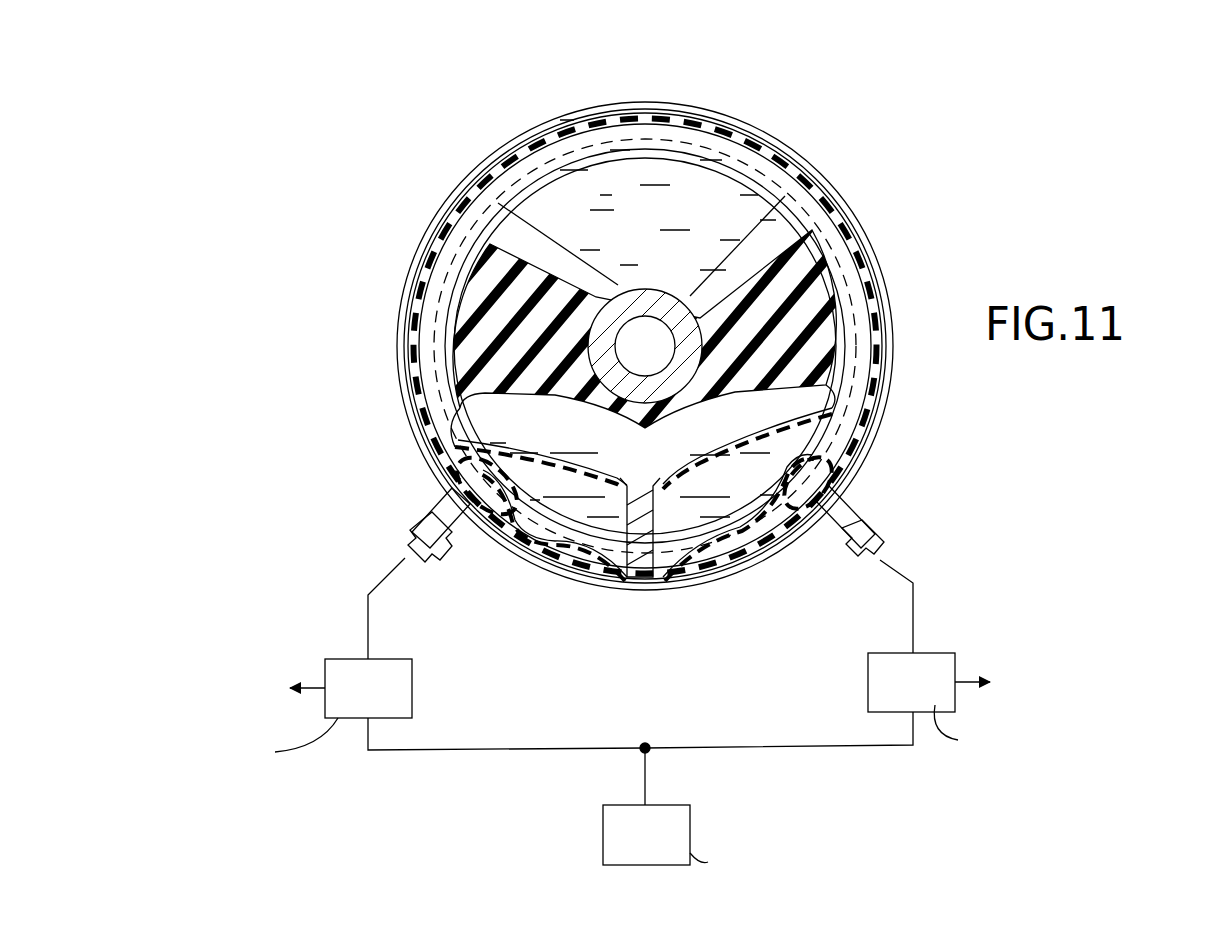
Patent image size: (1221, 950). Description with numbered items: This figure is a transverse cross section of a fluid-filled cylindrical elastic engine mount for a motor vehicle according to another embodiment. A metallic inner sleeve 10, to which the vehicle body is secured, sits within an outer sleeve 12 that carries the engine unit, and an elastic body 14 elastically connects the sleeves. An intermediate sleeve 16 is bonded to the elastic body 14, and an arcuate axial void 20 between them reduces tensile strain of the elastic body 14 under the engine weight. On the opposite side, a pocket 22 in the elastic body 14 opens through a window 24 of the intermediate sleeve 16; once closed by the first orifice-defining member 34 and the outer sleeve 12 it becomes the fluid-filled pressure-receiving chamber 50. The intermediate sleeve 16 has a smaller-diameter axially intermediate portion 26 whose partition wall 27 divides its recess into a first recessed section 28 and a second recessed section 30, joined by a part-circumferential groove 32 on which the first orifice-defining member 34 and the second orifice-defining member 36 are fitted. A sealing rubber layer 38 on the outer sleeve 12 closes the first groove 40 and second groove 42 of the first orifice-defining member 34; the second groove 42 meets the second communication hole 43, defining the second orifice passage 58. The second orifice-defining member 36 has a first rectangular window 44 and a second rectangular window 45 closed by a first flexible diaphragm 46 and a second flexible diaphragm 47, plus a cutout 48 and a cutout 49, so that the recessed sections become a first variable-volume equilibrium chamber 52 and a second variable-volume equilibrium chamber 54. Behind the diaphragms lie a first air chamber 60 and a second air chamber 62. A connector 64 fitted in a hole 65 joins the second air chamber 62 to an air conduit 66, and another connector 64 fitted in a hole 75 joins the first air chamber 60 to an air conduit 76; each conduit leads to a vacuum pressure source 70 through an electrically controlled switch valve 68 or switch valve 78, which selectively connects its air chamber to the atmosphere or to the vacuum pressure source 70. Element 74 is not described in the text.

The inner sleeve 10 is at (625, 303).
The outer sleeve 12 is at (805, 170).
The elastic body 14 is at (503, 265).
The intermediate sleeve 16 is at (436, 383).
The axial void 20 is at (628, 457).
The pocket 22 is at (752, 243).
The window 24 is at (826, 182).
The axially intermediate portion 26 is at (880, 335).
The partition wall 27 is at (643, 500).
The first recessed section 28 is at (440, 440).
The second recessed section 30 is at (822, 428).
The part-circumferential groove 32 is at (440, 300).
The first orifice-defining member 34 is at (548, 140).
The second orifice-defining member 36 is at (653, 590).
The sealing rubber layer 38 is at (770, 138).
The first groove 40 is at (460, 258).
The second groove 42 is at (852, 226).
The second communication hole 43 is at (652, 140).
The first rectangular window 44 is at (460, 490).
The second rectangular window 45 is at (857, 475).
The first flexible diaphragm 46 is at (570, 525).
The second flexible diaphragm 47 is at (693, 540).
The cutout 48 is at (432, 448).
The cutout 49 is at (850, 440).
The pressure-receiving chamber 50 is at (582, 176).
The first variable-volume equilibrium chamber 52 is at (512, 550).
The second variable-volume equilibrium chamber 54 is at (720, 518).
The second orifice passage 58 is at (800, 158).
The first air chamber 60 is at (550, 548).
The second air chamber 62 is at (767, 530).
The connector 64 is at (875, 515).
The hole 65 is at (828, 518).
The air conduit 66 is at (835, 757).
The switch valve 68 is at (926, 707).
The vacuum pressure source 70 is at (871, 810).
The left flange 74 is at (440, 563).
The hole 75 is at (463, 522).
The air conduit 76 is at (422, 762).
The switch valve 78 is at (348, 716).